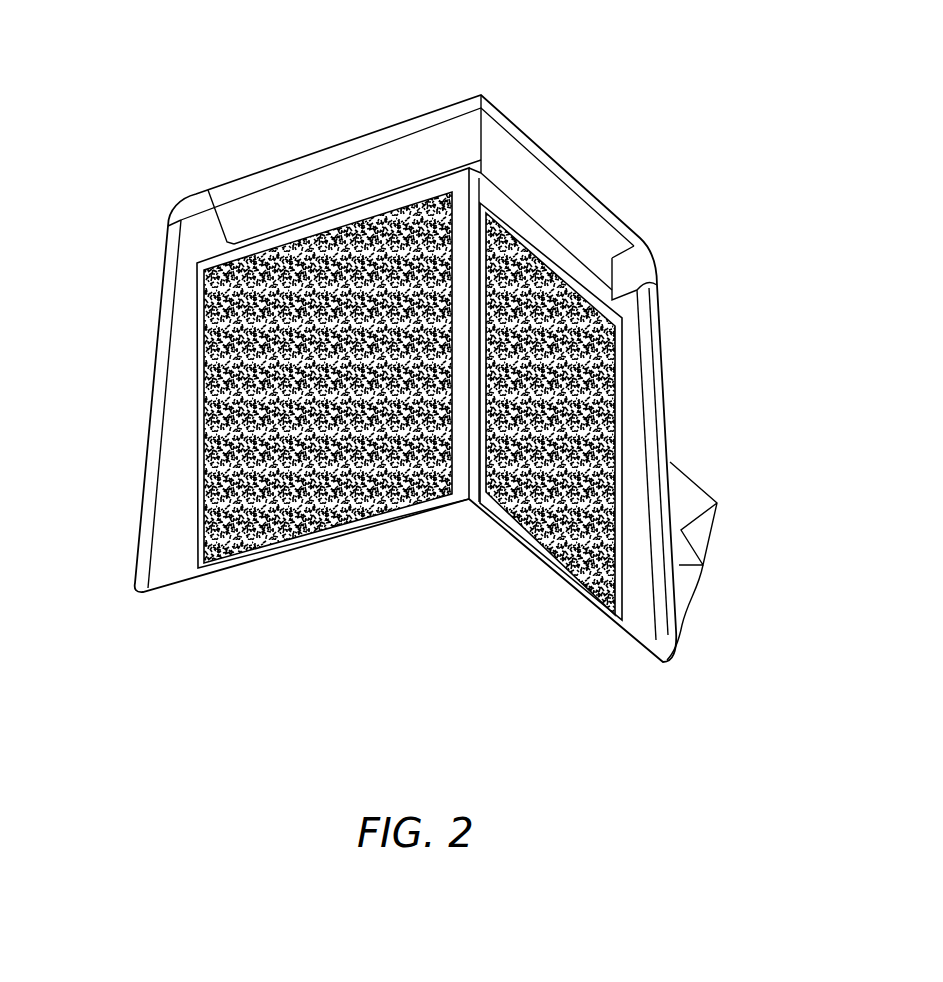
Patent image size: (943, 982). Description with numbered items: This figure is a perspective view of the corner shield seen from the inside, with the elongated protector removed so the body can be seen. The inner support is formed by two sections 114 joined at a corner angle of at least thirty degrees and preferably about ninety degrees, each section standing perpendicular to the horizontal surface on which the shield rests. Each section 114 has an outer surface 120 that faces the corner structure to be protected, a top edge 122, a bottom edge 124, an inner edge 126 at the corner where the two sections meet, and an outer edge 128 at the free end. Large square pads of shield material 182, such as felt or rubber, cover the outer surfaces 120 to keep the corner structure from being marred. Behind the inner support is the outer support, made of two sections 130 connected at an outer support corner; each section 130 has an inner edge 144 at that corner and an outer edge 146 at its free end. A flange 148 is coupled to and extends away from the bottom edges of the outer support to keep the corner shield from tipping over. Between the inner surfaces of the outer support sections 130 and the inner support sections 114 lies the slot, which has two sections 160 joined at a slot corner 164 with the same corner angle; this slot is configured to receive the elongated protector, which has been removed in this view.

The section of the inner support 114 is at (172, 494).
The outer surface 120 is at (198, 246).
The top edge 122 is at (255, 233).
The bottom edge 124 is at (312, 547).
The inner edge 126 is at (463, 472).
The outer edge 128 is at (158, 402).
The section of the outer support 130 is at (318, 140).
The inner edge 144 is at (483, 94).
The outer edge 146 is at (666, 359).
The flange 148 is at (720, 523).
The slot section 160 is at (290, 188).
The slot corner 164 is at (459, 145).
The shield material 182 is at (265, 507).